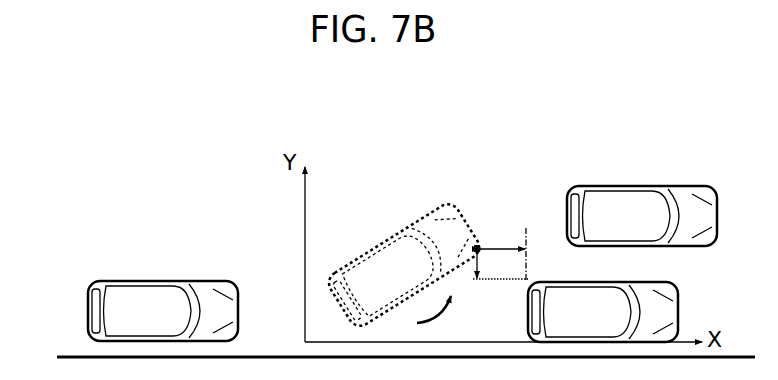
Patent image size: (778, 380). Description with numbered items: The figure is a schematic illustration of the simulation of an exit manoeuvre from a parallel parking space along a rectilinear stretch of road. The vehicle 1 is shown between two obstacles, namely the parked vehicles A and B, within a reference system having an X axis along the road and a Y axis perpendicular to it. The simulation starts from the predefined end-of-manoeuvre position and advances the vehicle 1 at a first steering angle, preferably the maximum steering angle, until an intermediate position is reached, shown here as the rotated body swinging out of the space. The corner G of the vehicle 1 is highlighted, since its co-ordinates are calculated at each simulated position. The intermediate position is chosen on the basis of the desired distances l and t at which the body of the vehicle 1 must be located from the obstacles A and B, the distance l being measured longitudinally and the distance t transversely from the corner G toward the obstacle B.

The vehicle 1 is at (520, 258).
The obstacle A is at (163, 311).
The obstacle B is at (603, 312).
The corner of the vehicle G is at (477, 244).
The desired distance l is at (504, 244).
The desired distance t is at (481, 258).